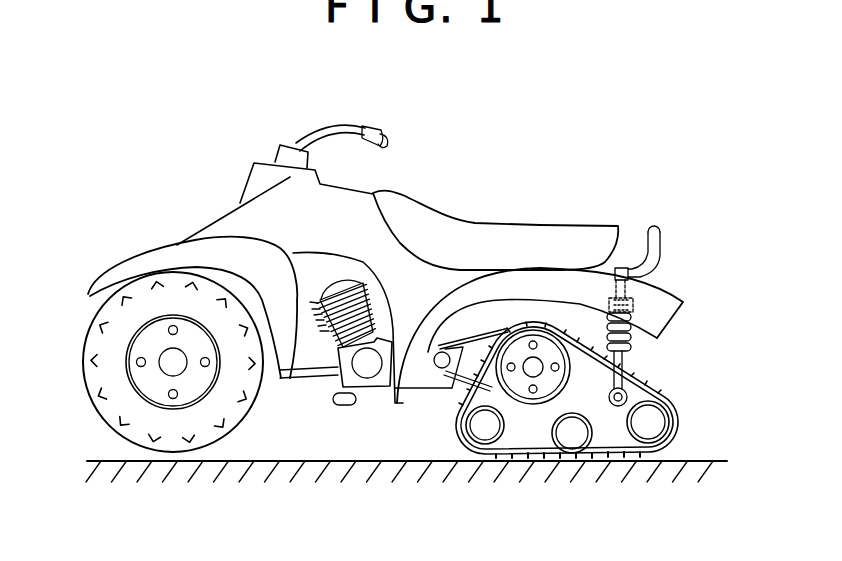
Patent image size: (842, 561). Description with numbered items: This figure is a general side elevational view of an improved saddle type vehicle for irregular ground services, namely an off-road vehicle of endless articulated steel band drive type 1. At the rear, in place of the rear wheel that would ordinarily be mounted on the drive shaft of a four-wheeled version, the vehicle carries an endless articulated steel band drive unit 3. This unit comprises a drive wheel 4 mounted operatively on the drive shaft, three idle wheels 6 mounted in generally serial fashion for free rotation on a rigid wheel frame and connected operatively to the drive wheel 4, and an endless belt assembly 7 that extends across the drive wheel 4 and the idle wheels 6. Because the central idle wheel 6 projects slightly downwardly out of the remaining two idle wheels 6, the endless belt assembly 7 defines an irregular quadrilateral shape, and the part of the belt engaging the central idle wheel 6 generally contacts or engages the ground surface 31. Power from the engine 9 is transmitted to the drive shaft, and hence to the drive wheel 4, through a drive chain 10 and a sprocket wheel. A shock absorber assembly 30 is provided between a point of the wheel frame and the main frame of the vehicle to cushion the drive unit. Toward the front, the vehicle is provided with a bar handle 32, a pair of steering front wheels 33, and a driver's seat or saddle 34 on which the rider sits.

The off-road vehicle of endless articulated steel band drive type 1 is at (403, 191).
The endless articulated steel band drive unit 3 is at (682, 409).
The drive wheel 4 is at (542, 350).
The idle wheels 6 is at (474, 452).
The endless belt assembly 7 is at (538, 458).
The engine 9 is at (322, 318).
The drive chain 10 is at (451, 378).
The shock absorber assembly 30 is at (640, 342).
The ground surface 31 is at (390, 452).
The bar handle 32 is at (331, 123).
The steering front wheels 33 is at (118, 368).
The driver's seat 34 is at (503, 247).